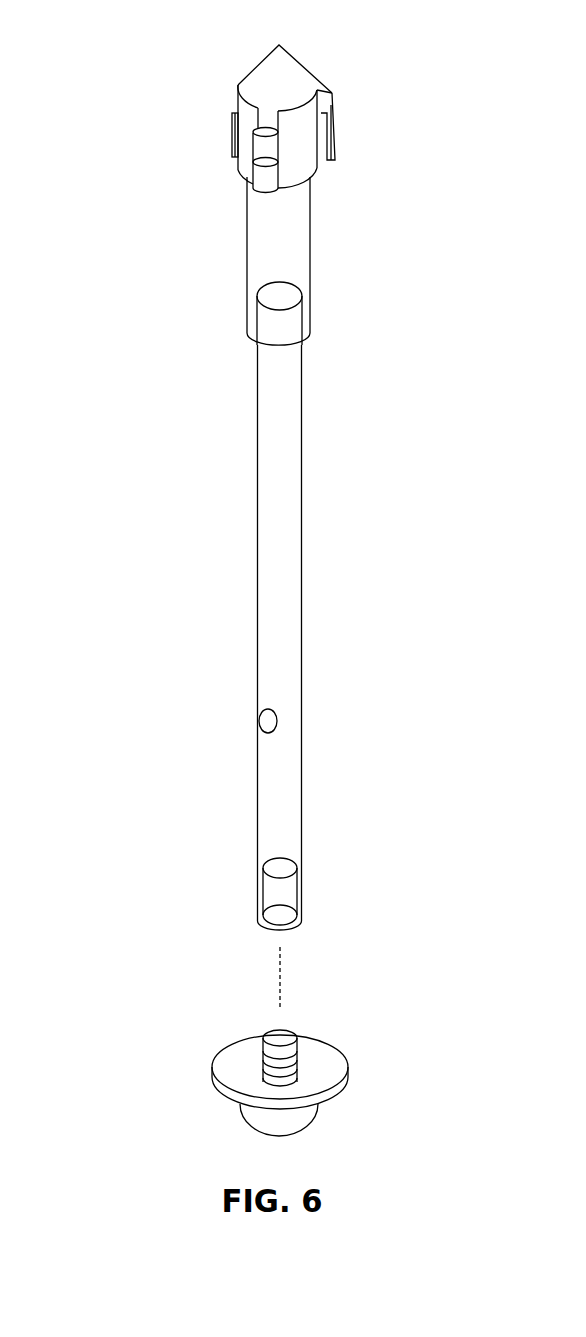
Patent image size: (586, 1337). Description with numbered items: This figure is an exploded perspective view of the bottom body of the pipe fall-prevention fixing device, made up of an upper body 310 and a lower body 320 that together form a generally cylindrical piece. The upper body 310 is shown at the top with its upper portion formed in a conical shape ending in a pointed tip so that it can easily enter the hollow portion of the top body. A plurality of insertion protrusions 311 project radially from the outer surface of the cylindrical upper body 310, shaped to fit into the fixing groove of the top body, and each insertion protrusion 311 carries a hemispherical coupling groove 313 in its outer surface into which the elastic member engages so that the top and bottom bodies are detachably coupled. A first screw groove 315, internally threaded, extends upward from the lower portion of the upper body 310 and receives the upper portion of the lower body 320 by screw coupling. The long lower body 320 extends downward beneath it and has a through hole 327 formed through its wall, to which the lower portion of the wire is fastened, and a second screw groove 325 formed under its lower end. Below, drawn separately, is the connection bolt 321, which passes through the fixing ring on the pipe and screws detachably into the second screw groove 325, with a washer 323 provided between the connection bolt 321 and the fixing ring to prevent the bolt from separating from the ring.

The upper body 310 is at (226, 234).
The insertion protrusion 311 is at (237, 78).
The coupling groove 313 is at (232, 104).
The first screw groove 315 is at (310, 308).
The lower body 320 is at (238, 607).
The through hole 327 is at (257, 717).
The second screw groove 325 is at (302, 888).
The washer 323 is at (317, 1055).
The connection bolt 321 is at (293, 1120).